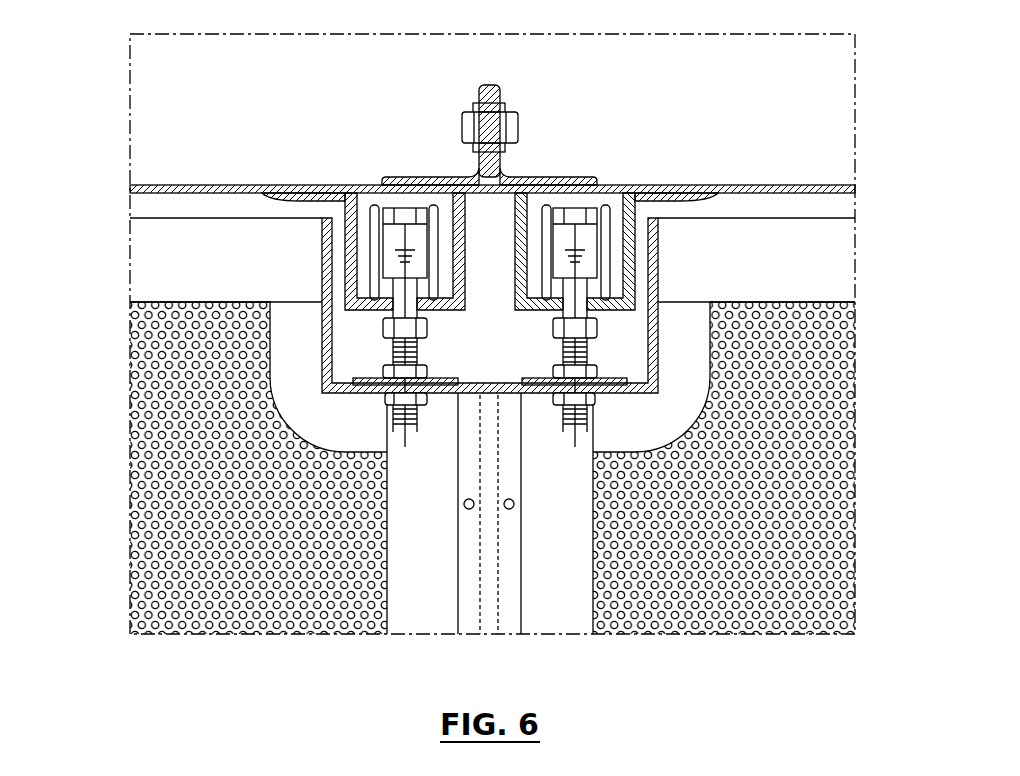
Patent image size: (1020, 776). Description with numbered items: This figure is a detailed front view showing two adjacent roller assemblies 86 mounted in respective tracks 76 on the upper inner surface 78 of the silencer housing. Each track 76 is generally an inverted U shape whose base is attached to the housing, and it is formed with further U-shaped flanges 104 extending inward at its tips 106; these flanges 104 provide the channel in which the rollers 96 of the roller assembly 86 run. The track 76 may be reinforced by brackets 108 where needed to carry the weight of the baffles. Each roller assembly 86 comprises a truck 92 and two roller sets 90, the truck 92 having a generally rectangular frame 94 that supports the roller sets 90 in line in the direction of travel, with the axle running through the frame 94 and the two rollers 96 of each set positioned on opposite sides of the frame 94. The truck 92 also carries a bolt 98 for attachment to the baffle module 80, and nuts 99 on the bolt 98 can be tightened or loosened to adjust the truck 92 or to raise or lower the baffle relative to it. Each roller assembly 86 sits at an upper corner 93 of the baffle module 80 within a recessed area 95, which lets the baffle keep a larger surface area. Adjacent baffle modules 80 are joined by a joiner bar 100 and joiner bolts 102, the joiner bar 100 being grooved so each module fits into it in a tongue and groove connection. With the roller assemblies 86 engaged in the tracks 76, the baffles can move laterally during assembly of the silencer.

The track 76 is at (526, 285).
The upper inner surface 78 is at (786, 193).
The baffle module 80 is at (132, 472).
The roller assembly 86 is at (542, 321).
The roller set 90 is at (372, 183).
The truck 92 is at (375, 254).
The upper corner 93 is at (198, 281).
The frame 94 is at (423, 252).
The recessed area 95 is at (372, 374).
The roller 96 is at (546, 247).
The bolt 98 is at (383, 325).
The nut 99 is at (552, 371).
The joiner bar 100 is at (563, 562).
The joiner bolt 102 is at (520, 503).
The U-shaped flange 104 is at (340, 303).
The tip 106 is at (352, 290).
The bracket 108 is at (308, 200).